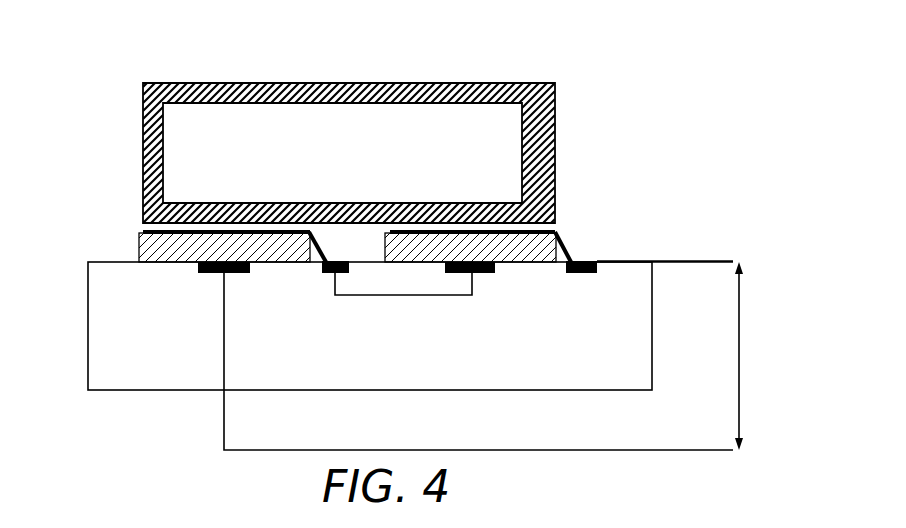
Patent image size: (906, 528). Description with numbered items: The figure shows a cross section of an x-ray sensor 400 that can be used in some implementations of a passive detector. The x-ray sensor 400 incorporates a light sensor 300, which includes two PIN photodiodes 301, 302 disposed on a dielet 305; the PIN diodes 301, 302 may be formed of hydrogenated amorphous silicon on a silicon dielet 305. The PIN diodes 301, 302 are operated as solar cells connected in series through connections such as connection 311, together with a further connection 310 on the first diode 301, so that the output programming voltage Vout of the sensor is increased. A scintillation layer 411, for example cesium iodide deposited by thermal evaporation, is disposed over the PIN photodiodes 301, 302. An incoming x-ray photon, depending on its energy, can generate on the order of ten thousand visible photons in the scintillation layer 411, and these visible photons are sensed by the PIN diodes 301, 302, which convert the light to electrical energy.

The x-ray sensor 400 is at (526, 59).
The scintillation layer 411 is at (327, 132).
The light sensor 300 is at (570, 217).
The first thermally conductive layer 310 is at (172, 230).
The connection 311 is at (463, 230).
The PIN photodiode 301 is at (138, 251).
The PIN photodiode 302 is at (545, 243).
The dielet 305 is at (102, 315).